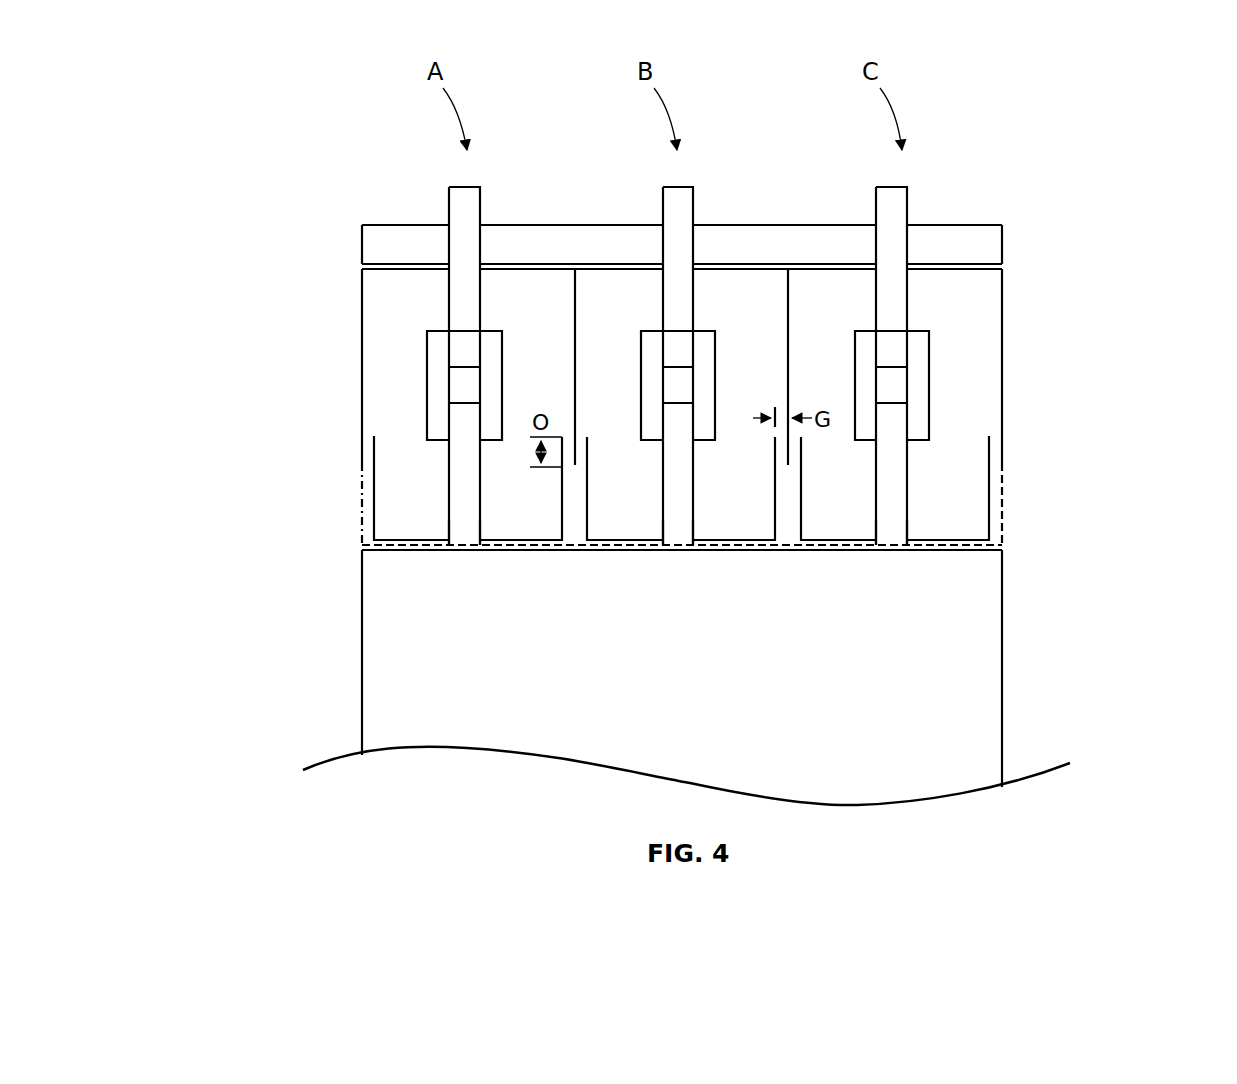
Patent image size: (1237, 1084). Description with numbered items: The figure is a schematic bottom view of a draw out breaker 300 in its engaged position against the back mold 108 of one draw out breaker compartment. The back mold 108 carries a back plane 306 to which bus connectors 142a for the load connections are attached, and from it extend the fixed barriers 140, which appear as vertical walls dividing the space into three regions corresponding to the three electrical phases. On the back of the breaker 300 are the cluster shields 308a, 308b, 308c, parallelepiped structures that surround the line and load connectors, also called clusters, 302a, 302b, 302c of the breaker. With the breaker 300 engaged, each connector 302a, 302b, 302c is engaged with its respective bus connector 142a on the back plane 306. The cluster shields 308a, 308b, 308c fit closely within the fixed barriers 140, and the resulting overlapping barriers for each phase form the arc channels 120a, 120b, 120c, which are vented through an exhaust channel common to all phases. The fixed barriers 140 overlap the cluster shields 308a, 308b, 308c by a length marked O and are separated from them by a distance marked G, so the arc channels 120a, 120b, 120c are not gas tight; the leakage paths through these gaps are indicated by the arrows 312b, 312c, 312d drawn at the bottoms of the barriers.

The back mold 108 is at (1108, 372).
The arc channel 120a is at (431, 317).
The arc channel 120b is at (647, 317).
The arc channel 120c is at (860, 317).
The fixed barriers 140 is at (362, 358).
The bus connectors 142a is at (470, 297).
The draw out breaker 300 is at (383, 690).
The connector 302a is at (462, 537).
The connector 302b is at (677, 537).
The connector 302c is at (891, 537).
The back plane 306 is at (992, 249).
The cluster shield 308a is at (372, 510).
The cluster shield 308b is at (587, 507).
The cluster shield 308c is at (801, 507).
The arrow 312b is at (575, 514).
The arrow 312c is at (788, 514).
The arrow 312d is at (996, 468).